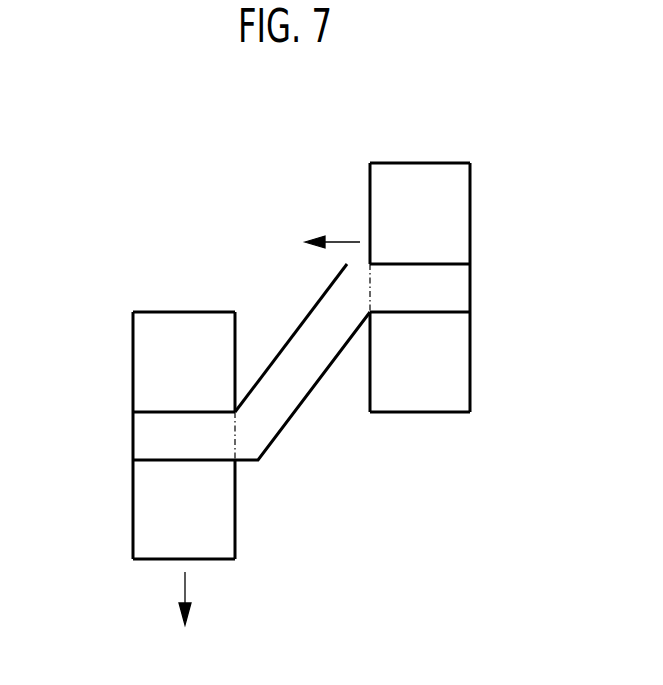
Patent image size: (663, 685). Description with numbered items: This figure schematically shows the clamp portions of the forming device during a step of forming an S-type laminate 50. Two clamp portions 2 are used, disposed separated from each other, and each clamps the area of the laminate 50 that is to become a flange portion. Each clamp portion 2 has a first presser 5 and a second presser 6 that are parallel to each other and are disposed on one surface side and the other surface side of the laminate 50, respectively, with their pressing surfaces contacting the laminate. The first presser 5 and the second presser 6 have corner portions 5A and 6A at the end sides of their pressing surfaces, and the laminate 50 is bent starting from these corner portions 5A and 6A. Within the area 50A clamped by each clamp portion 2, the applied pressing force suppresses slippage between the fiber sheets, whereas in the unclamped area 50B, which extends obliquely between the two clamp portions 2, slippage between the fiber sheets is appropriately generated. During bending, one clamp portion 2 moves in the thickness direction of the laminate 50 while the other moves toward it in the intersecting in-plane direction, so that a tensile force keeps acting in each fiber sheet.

The clamp portion 2 is at (428, 152).
The first presser 5 is at (133, 343).
The corner portion 5A is at (228, 403).
The second presser 6 is at (133, 518).
The corner portion 6A is at (382, 320).
The laminate 50 is at (298, 400).
The area clamped by the clamp portion 50A is at (147, 438).
The area where slippage is not suppressed 50B is at (265, 432).